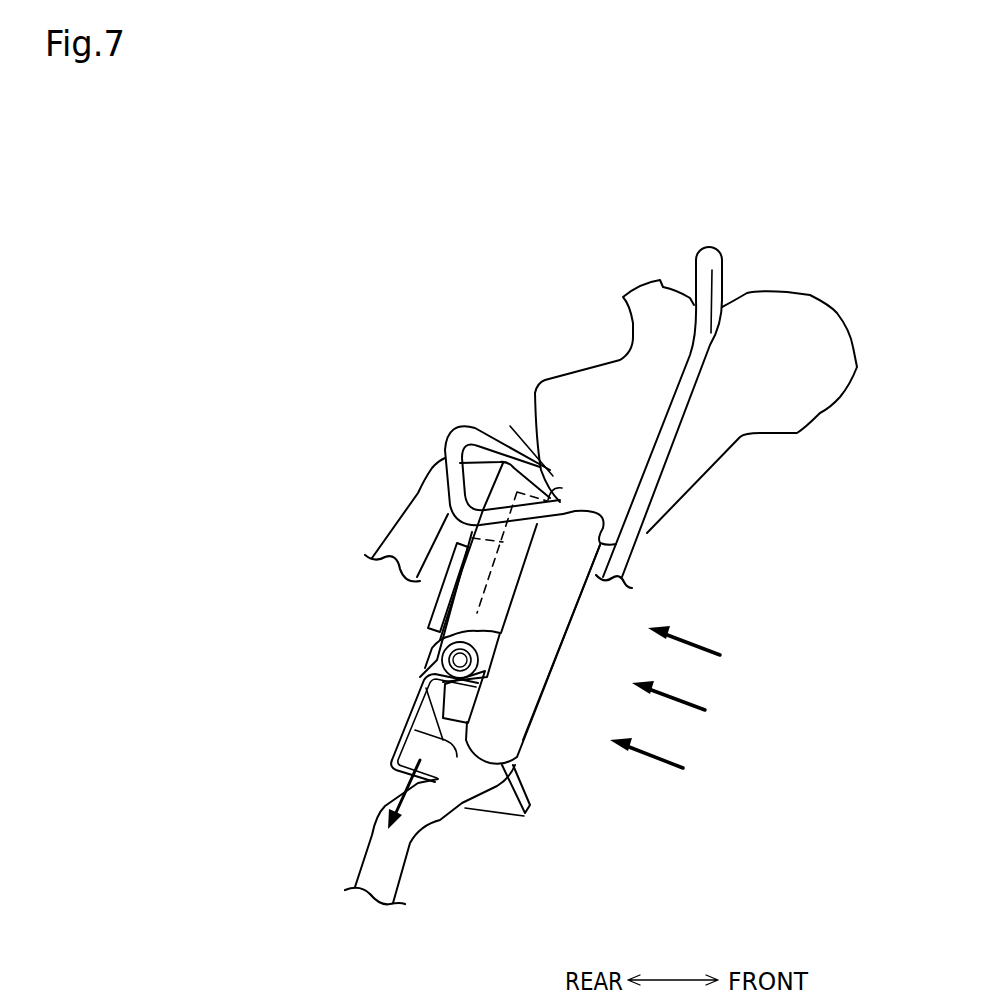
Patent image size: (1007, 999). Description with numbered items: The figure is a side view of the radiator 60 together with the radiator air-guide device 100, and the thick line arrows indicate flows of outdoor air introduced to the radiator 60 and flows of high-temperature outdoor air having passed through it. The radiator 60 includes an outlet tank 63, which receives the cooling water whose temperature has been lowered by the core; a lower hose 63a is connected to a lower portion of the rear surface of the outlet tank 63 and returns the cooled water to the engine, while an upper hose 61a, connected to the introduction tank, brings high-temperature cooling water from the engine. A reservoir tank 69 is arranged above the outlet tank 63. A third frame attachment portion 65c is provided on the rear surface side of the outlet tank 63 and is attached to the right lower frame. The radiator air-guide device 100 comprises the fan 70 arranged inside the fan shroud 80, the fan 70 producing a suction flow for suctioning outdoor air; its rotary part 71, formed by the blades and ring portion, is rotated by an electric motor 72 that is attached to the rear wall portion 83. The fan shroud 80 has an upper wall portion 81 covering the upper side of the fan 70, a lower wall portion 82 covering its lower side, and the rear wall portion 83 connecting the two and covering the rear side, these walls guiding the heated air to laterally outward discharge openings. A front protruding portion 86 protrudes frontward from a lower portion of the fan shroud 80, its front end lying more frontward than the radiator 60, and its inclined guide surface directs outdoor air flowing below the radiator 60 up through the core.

The reservoir tank 69 is at (810, 307).
The upper wall portion 81 is at (520, 450).
The upper hose 61a is at (413, 525).
The radiator 60 is at (603, 607).
The outlet tank 63 is at (563, 635).
The third frame attachment portion 65c is at (487, 646).
The rear wall portion 83 is at (433, 677).
The lower wall portion 82 is at (392, 775).
The lower hose 63a is at (372, 838).
The front protruding portion 86 is at (530, 785).
The electric motor 72 is at (437, 603).
The rotary part 71 is at (440, 620).
The fan 70 is at (233, 627).
The fan shroud 80 is at (372, 724).
The radiator air-guide device 100 is at (148, 640).